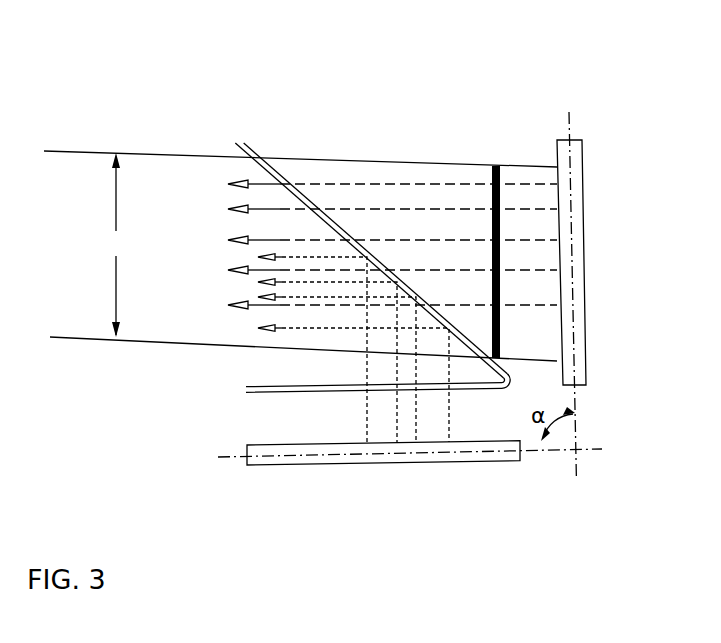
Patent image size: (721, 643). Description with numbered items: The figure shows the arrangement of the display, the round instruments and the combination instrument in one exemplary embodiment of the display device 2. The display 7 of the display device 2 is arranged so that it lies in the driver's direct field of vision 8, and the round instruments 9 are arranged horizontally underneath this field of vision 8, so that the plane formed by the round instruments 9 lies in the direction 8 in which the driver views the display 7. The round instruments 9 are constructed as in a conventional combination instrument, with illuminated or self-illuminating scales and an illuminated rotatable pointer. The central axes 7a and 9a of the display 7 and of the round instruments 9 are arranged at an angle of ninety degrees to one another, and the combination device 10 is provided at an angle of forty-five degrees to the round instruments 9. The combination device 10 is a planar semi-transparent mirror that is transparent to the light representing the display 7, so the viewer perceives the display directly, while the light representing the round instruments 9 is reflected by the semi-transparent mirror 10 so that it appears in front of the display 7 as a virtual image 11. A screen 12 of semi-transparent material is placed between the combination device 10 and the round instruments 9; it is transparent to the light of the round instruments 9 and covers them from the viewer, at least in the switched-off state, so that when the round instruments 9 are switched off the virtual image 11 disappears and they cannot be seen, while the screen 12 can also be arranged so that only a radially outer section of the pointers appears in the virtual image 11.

The display device 2 is at (371, 112).
The display 7 is at (577, 235).
The central axis of the display 7a is at (568, 125).
The driver's field of vision 8 is at (115, 245).
The round instruments 9 is at (347, 458).
The central axis of the round instruments 9a is at (232, 457).
The combination device 10 is at (268, 168).
The virtual image 11 is at (492, 175).
The screen 12 is at (255, 393).